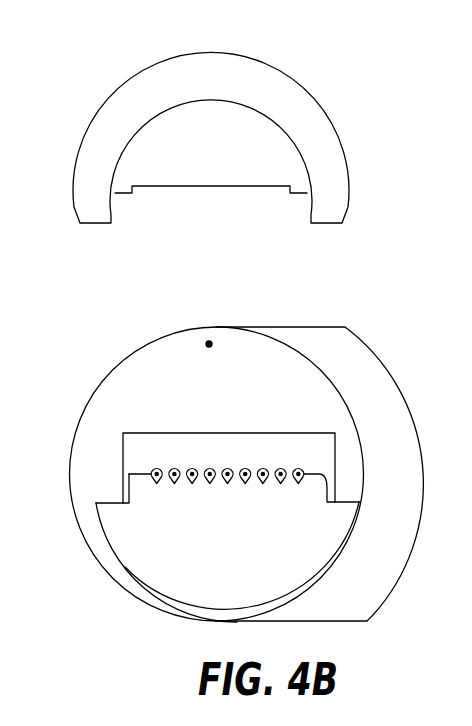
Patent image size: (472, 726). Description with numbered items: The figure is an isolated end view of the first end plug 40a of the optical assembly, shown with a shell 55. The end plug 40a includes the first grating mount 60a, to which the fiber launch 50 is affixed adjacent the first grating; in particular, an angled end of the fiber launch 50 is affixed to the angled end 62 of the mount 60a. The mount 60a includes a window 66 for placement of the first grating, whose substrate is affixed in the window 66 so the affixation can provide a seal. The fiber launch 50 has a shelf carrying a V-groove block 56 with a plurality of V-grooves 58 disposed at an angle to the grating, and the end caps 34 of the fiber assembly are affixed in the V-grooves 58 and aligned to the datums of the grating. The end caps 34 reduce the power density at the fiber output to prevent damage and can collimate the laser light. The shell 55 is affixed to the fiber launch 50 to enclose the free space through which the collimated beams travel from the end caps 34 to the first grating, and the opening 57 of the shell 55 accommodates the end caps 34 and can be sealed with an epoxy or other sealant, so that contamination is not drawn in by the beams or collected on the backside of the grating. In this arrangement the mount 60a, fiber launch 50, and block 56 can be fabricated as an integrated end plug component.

The shell 55 is at (136, 109).
The opening 57 is at (197, 187).
The first end plug 40a is at (100, 316).
The first grating mount 60a is at (104, 380).
The angled end 62 is at (209, 341).
The window 66 is at (224, 436).
The fiber launch 50 is at (124, 568).
The V-groove block 56 is at (129, 484).
The V-grooves 58 is at (151, 472).
The end caps 34 is at (174, 468).